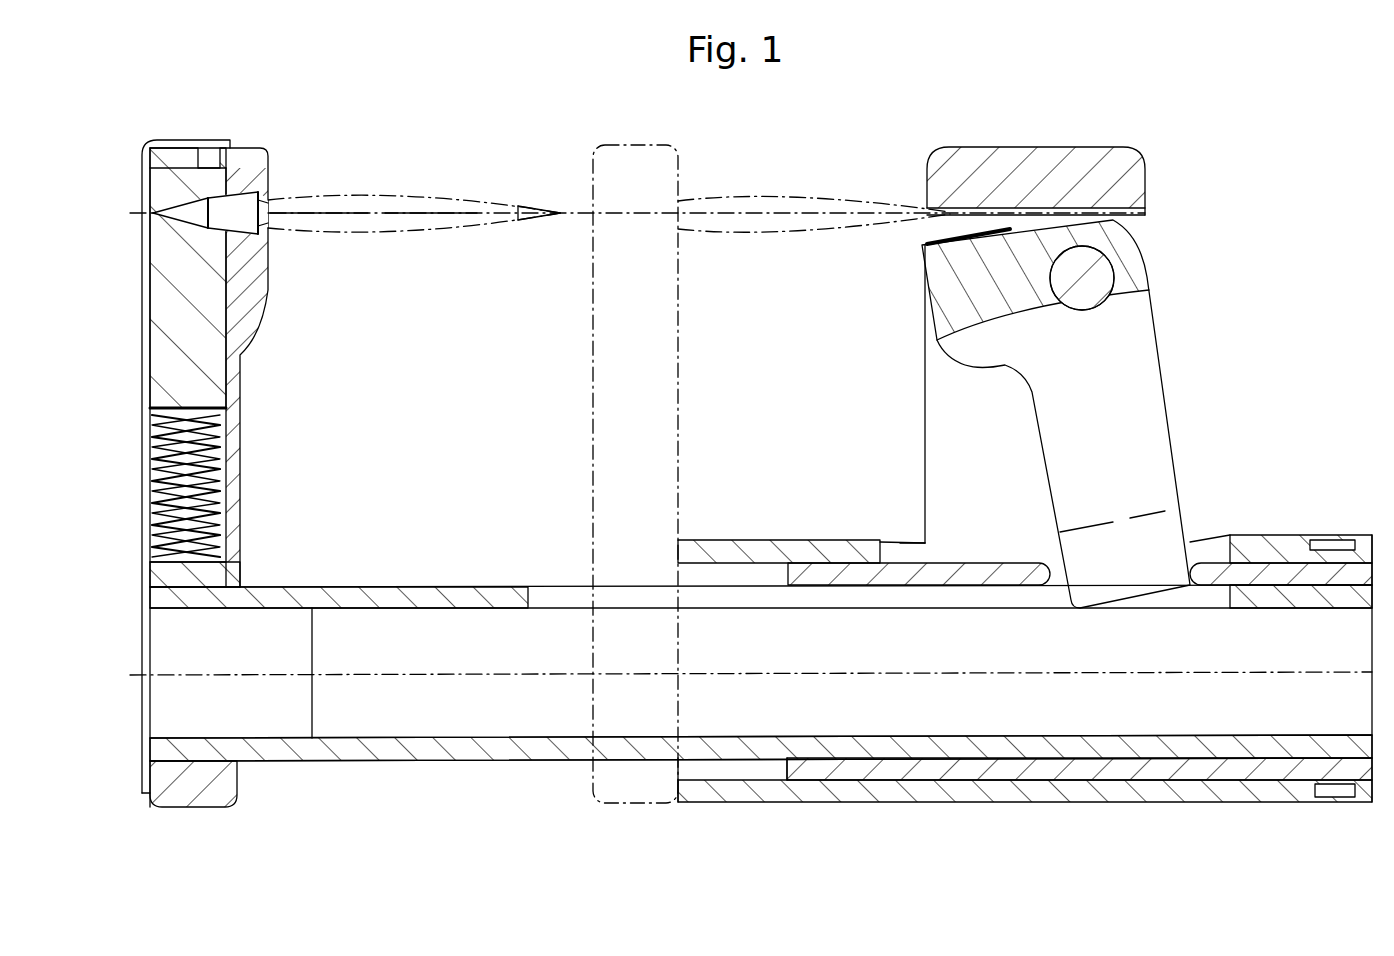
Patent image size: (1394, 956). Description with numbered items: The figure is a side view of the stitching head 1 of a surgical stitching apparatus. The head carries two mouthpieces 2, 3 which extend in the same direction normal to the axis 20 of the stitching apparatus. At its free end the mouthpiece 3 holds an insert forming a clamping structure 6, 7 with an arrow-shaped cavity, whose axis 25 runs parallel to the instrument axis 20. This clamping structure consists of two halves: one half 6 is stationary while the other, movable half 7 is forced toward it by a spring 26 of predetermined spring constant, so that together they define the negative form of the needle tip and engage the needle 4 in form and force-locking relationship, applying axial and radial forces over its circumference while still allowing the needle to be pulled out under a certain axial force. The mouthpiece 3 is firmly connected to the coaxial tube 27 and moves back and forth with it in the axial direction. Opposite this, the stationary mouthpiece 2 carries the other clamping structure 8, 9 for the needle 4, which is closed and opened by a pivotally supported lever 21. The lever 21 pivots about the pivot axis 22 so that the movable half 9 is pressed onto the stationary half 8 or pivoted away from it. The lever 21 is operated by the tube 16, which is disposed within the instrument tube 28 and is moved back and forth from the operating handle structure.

The stitching head 1 is at (586, 96).
The stationary mouthpiece 2 is at (940, 452).
The mouthpiece 3 is at (241, 352).
The needle 4 is at (395, 205).
The stationary half of clamping structure 6 is at (165, 190).
The movable half of clamping structure 7 is at (180, 320).
The stationary half of clamping structure 8 is at (1078, 170).
The movable half of clamping structure 9 is at (925, 243).
The tube 16 is at (1280, 565).
The axis of the stitching apparatus 20 is at (658, 677).
The lever 21 is at (1140, 390).
The pivot axis 22 is at (1083, 280).
The axis of clamping structure 25 is at (320, 213).
The spring 26 is at (205, 470).
The coaxial tube 27 is at (355, 760).
The instrument tube 28 is at (1356, 546).